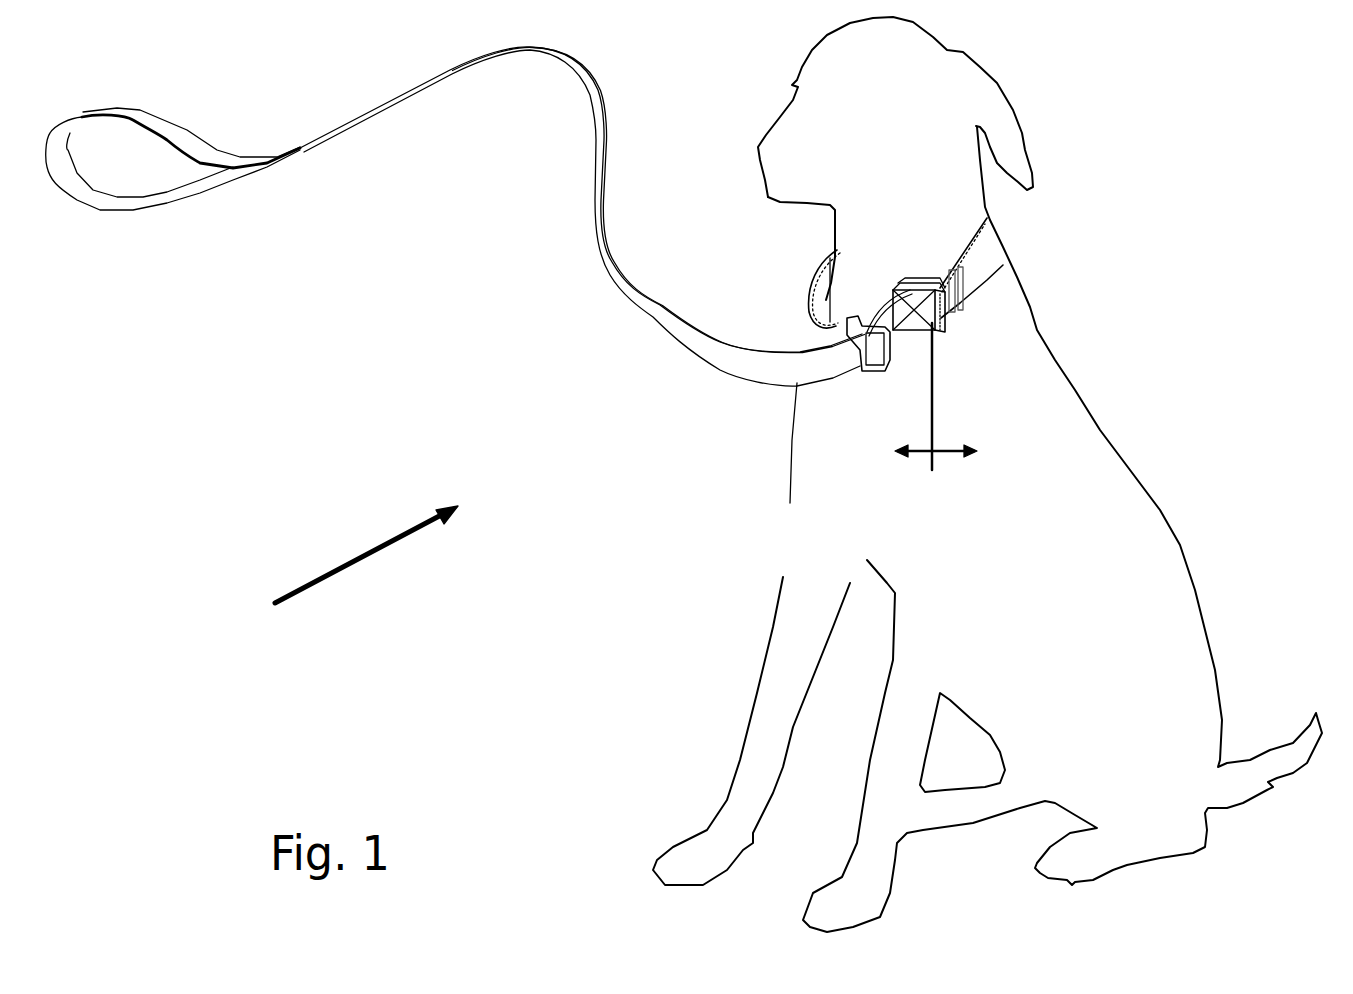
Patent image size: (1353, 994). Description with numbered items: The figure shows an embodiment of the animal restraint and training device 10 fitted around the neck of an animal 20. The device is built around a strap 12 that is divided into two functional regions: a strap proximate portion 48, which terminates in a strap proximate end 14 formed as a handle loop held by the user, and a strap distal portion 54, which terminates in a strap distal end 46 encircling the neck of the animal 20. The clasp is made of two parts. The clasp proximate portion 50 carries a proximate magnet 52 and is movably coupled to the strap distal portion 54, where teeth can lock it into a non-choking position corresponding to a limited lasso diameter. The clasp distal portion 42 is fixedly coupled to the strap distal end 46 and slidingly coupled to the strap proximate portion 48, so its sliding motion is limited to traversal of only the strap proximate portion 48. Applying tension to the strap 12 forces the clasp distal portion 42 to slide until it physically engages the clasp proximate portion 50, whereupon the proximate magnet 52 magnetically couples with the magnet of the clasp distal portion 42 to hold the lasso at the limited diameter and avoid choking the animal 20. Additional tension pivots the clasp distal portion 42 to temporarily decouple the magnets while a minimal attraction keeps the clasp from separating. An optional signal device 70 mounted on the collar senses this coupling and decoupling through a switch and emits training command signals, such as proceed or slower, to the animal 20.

The animal restraint and training device 10 is at (275, 603).
The strap 12 is at (655, 318).
The strap proximate end 14 is at (140, 200).
The animal 20 is at (1053, 388).
The clasp distal portion 42 is at (880, 357).
The strap distal end 46 is at (820, 293).
The strap proximate portion 48 is at (900, 455).
The clasp proximate portion 50 is at (915, 330).
The proximate magnet 52 is at (905, 322).
The strap distal portion 54 is at (973, 455).
The signal device 70 is at (972, 278).